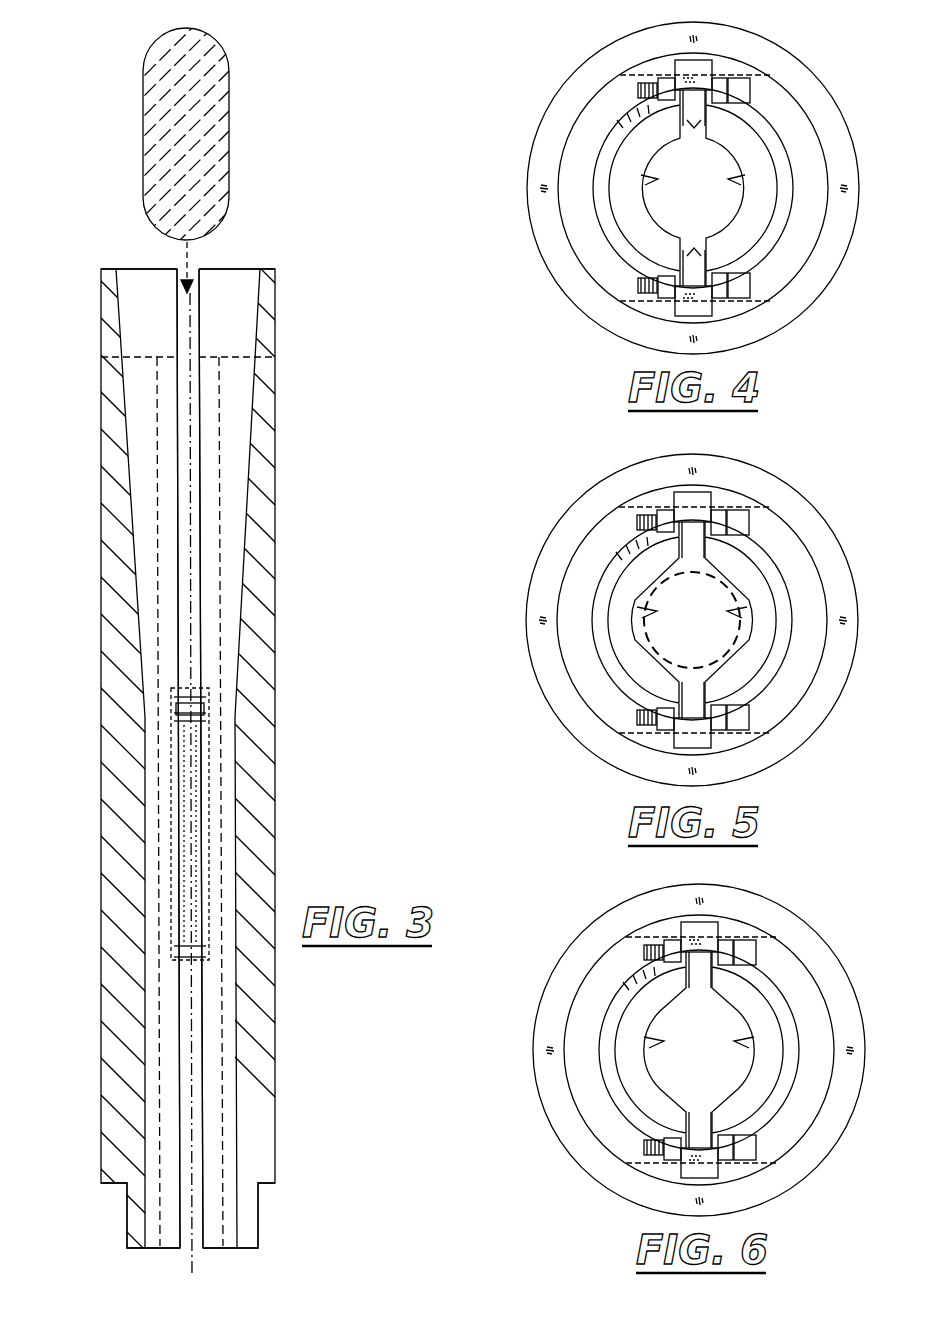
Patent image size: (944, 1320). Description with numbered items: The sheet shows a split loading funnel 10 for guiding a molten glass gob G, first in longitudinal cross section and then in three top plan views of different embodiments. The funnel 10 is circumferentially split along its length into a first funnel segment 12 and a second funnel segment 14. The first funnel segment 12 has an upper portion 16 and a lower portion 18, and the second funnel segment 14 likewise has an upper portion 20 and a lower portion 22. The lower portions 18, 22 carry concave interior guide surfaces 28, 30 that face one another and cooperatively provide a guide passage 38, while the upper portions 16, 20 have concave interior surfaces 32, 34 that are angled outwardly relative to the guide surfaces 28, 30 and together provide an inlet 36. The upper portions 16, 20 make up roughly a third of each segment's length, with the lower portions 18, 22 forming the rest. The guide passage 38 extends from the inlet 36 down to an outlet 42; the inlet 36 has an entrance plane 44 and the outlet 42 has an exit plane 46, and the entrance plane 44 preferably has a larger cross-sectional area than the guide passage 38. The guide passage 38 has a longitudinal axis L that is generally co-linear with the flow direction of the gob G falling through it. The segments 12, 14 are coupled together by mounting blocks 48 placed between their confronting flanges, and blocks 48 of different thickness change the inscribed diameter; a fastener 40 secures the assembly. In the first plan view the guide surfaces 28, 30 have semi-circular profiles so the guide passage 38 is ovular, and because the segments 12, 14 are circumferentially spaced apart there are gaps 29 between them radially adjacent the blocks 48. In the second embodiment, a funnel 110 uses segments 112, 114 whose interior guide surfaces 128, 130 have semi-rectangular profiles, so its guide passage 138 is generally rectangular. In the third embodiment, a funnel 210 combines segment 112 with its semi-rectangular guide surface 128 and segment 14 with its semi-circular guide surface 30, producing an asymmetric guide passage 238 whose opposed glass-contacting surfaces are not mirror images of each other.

In FIG. 3, the split loading funnel 10 is at (68, 322).
In FIG. 4, the split loading funnel 10 is at (665, 188).
In FIG. 3, the first funnel segment 12 is at (92, 372).
In FIG. 4, the first funnel segment 12 is at (662, 188).
In FIG. 3, the second funnel segment 14 is at (281, 333).
In FIG. 4, the second funnel segment 14 is at (733, 196).
In FIG. 6, the second funnel segment 14 is at (738, 1056).
In FIG. 3, the upper portion 16 is at (120, 606).
In FIG. 3, the lower portion 18 is at (121, 800).
In FIG. 3, the upper portion 20 is at (262, 477).
In FIG. 3, the lower portion 22 is at (262, 795).
In FIG. 3, the interior guide surface 28 is at (150, 845).
In FIG. 4, the interior guide surface 28 is at (611, 167).
In FIG. 4, the gaps 29 is at (768, 203).
In FIG. 3, the interior guide surface 30 is at (235, 973).
In FIG. 4, the interior guide surface 30 is at (807, 139).
In FIG. 6, the interior guide surface 30 is at (813, 1001).
In FIG. 3, the concave interior surface 32 is at (142, 590).
In FIG. 3, the concave interior surface 34 is at (236, 528).
In FIG. 3, the inlet 36 is at (131, 262).
In FIG. 3, the guide passage 38 is at (238, 1182).
In FIG. 4, the guide passage 38 is at (693, 188).
In FIG. 3, the fastener 40 is at (233, 669).
In FIG. 3, the outlet 42 is at (158, 1254).
In FIG. 3, the entrance plane 44 is at (256, 268).
In FIG. 3, the exit plane 46 is at (205, 1250).
In FIG. 4, the mounting blocks 48 is at (693, 192).
In FIG. 3, the longitudinal axis L is at (192, 1072).
In FIG. 3, the molten glass gob G is at (148, 191).
In FIG. 5, the molten glass gob G is at (643, 681).
In FIG. 5, the funnel 110 is at (656, 620).
In FIG. 5, the segment 112 is at (656, 620).
In FIG. 6, the segment 112 is at (662, 1050).
In FIG. 5, the segment 114 is at (739, 628).
In FIG. 5, the interior guide surface 128 is at (568, 581).
In FIG. 6, the interior guide surface 128 is at (572, 1016).
In FIG. 5, the interior guide surface 130 is at (810, 568).
In FIG. 5, the guide passage 138 is at (692, 620).
In FIG. 6, the funnel 210 is at (678, 1036).
In FIG. 6, the guide passage 238 is at (699, 1050).